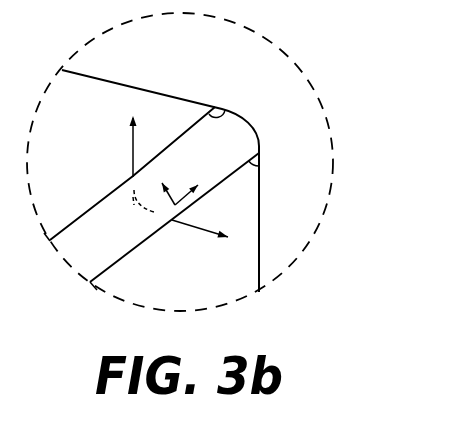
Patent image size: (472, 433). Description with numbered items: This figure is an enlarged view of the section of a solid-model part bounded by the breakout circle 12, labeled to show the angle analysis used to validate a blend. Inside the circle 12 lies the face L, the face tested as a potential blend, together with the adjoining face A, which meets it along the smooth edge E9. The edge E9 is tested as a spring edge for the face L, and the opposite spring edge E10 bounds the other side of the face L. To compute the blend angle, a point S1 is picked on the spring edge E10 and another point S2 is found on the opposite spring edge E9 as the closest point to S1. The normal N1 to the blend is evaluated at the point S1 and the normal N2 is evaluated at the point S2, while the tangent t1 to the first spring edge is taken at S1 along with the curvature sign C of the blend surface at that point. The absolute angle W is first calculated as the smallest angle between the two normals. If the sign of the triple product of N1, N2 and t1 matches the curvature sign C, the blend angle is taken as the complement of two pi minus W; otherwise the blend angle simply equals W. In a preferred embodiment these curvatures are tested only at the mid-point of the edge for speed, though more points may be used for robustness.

The circle 12 is at (268, 40).
The spring edge E9 is at (230, 110).
The spring edge E10 is at (259, 163).
The adjoining face A is at (129, 174).
The face tested for blend L is at (171, 221).
The normal N1 is at (207, 246).
The normal N2 is at (150, 141).
The point on spring edge S1 is at (176, 252).
The point on opposite spring edge S2 is at (115, 162).
The curvature sign C is at (203, 180).
The tangent t1 is at (191, 179).
The absolute angle W is at (135, 209).